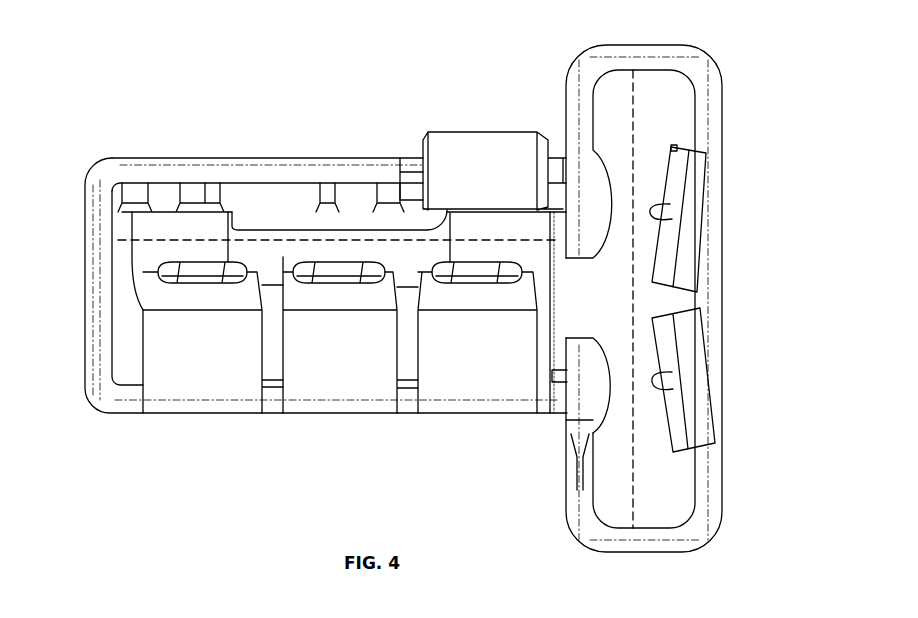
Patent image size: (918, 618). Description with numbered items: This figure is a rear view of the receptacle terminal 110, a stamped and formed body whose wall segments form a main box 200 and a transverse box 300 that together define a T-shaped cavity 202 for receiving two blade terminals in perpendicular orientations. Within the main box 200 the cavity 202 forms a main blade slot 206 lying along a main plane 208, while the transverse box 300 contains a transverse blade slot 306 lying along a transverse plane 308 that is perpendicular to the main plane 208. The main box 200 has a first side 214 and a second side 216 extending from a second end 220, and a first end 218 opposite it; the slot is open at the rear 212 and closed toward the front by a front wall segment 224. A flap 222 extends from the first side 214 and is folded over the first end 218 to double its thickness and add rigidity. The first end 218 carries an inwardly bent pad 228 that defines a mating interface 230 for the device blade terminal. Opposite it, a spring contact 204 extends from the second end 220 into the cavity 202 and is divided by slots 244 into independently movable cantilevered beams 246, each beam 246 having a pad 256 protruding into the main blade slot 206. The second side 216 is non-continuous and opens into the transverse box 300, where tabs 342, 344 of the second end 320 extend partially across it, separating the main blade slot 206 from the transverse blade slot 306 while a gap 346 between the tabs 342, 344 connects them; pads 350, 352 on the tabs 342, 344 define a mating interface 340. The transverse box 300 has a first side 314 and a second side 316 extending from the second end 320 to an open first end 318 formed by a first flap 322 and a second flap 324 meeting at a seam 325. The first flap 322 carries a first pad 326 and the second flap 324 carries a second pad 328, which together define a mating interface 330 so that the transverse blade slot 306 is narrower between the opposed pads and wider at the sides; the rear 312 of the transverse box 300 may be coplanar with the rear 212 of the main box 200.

The receptacle terminal 110 is at (114, 79).
The main box 200 is at (96, 373).
The first side 214 is at (98, 345).
The main blade slot 206 is at (172, 236).
The main plane 208 is at (142, 248).
The spring contact 204 is at (152, 337).
The pad 256 is at (212, 262).
The rear 212 is at (290, 173).
The pad 228 is at (347, 220).
The mating interface 230 is at (325, 235).
The first end 218 is at (357, 192).
The flap 222 is at (382, 193).
The front wall segment 224 is at (495, 212).
The beams 246 is at (212, 372).
The slots 244 is at (271, 368).
The second end 220 is at (333, 415).
The second side 216 is at (556, 411).
The tab 344 is at (572, 348).
The tab 342 is at (580, 250).
The transverse box 300 is at (567, 514).
The second end 320 is at (566, 113).
The first end 318 is at (706, 172).
The first side 314 is at (632, 46).
The transverse plane 308 is at (634, 103).
The transverse blade slot 306 is at (668, 120).
The pad 350 is at (623, 188).
The mating interface 340 is at (626, 188).
The first flap 322 is at (704, 205).
The first pad 326 is at (662, 210).
The cavity 202 is at (606, 287).
The gap 346 is at (581, 303).
The seam 325 is at (691, 298).
The mating interface 330 is at (648, 327).
The second pad 328 is at (662, 380).
The second flap 324 is at (690, 400).
The pad 352 is at (713, 440).
The second side 316 is at (625, 553).
The rear 312 is at (640, 540).